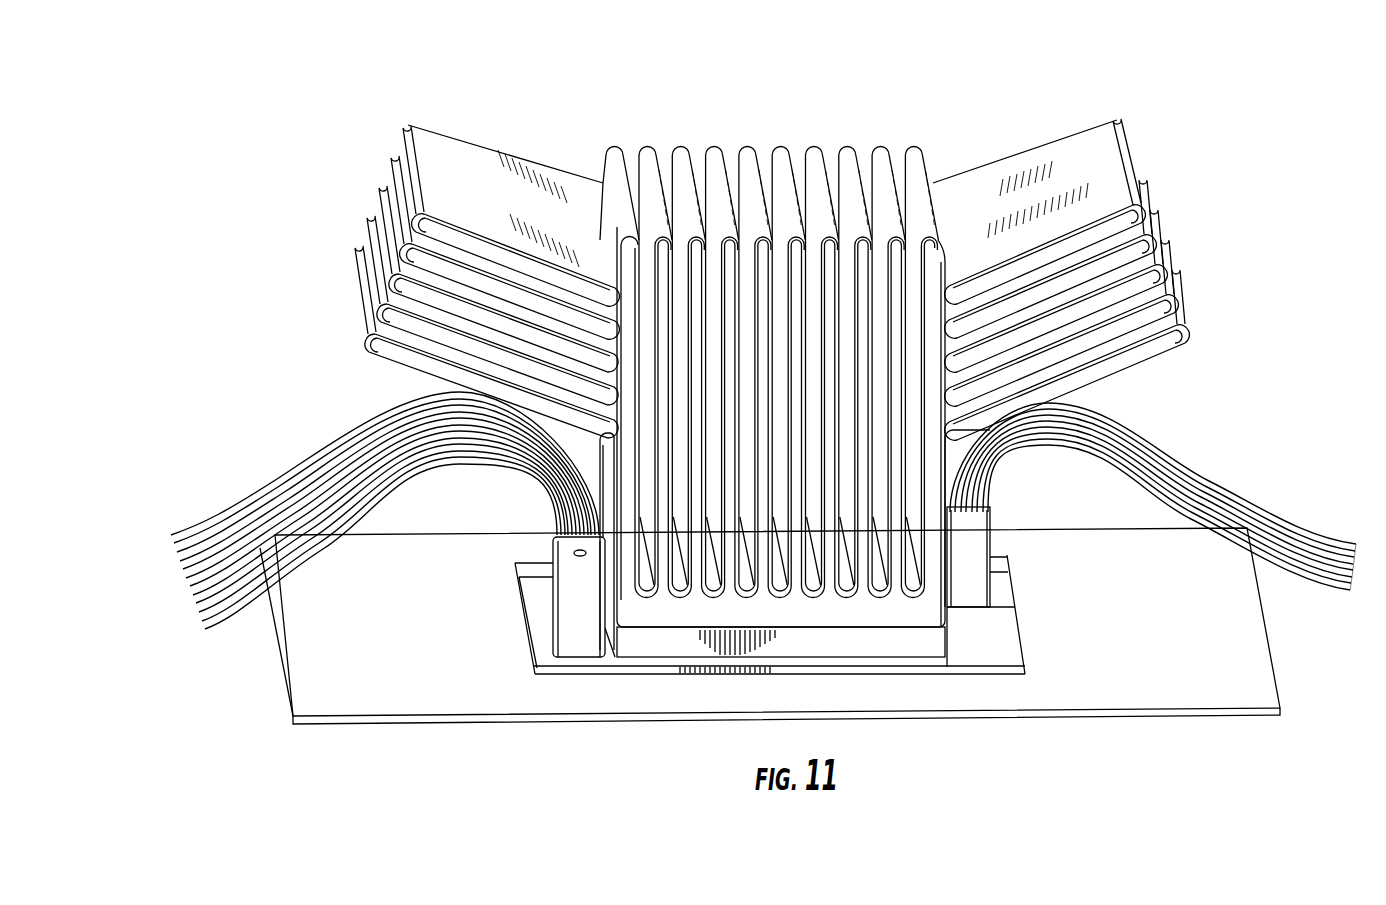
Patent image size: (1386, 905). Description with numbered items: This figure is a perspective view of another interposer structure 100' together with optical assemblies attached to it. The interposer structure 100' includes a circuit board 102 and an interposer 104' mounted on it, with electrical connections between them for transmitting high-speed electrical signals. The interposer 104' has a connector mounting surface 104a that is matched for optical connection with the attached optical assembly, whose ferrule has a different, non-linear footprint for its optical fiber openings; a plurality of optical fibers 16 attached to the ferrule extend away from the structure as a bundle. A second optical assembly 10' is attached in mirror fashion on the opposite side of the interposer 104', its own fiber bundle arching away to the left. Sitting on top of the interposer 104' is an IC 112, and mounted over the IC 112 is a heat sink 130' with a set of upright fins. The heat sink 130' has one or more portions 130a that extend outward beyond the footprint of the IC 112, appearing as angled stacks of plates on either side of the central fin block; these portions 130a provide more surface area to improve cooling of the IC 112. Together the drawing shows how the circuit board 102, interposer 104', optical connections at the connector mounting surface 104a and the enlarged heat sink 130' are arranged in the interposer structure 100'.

The heat sink portion 130a is at (473, 157).
The heat sink 130′ is at (811, 150).
The first cable bundle 10′ is at (347, 520).
The optical fibers 16 is at (1290, 557).
The interposer structure 100′ is at (846, 595).
The IC 112 is at (843, 643).
The interposer 104′ is at (955, 662).
The connector mounting surface 104a is at (1005, 593).
The circuit board 102 is at (1200, 680).